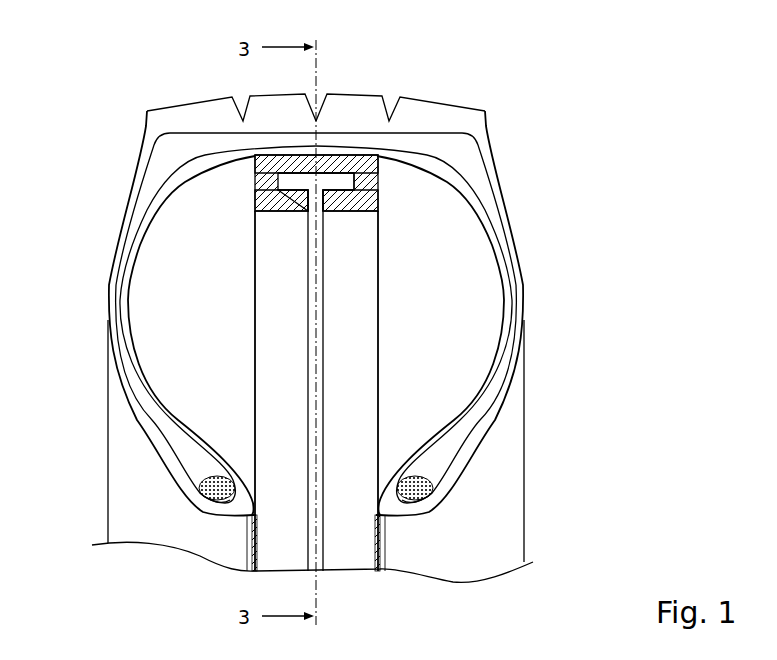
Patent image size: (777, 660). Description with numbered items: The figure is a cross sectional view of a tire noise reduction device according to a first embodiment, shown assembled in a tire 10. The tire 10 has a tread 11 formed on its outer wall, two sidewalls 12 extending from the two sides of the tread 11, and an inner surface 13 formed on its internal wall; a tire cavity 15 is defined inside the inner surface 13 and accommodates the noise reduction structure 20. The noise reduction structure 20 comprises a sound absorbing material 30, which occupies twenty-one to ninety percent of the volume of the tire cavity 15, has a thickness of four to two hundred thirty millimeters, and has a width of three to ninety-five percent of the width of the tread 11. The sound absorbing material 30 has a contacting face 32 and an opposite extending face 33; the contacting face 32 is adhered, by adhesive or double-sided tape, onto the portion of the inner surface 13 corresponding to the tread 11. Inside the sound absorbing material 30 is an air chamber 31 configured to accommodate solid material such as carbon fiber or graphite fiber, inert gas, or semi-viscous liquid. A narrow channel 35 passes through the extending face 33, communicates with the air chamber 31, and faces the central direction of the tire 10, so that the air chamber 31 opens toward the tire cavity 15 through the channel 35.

The tire 10 is at (72, 139).
The tread 11 is at (173, 104).
The sidewall 12 is at (110, 269).
The inner surface 13 is at (241, 158).
The tire cavity 15 is at (154, 285).
The noise reduction structure 20 is at (388, 181).
The sound absorbing material 30 is at (370, 194).
The air chamber 31 is at (338, 182).
The contacting face 32 is at (380, 163).
The extending face 33 is at (355, 212).
The channel 35 is at (323, 214).